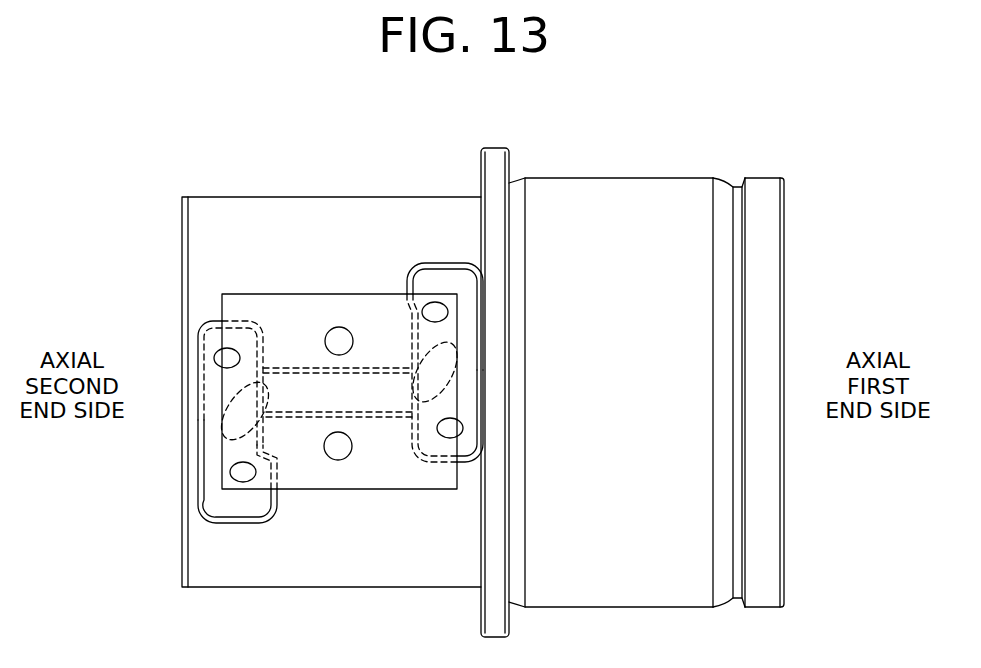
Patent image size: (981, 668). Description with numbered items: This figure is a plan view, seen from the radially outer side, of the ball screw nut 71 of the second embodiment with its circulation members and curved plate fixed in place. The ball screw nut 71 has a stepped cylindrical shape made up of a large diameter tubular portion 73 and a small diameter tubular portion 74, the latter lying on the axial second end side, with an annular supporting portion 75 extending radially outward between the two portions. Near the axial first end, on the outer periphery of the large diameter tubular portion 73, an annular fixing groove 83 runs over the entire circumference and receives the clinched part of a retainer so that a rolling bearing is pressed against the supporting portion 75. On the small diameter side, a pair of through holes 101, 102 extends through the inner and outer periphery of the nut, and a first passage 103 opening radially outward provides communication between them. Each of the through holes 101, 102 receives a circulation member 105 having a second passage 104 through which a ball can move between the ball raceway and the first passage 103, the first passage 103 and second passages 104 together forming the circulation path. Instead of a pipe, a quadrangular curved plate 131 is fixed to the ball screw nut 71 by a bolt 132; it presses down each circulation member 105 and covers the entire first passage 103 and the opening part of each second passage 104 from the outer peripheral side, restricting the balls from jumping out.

The ball screw nut 71 is at (153, 149).
The large diameter tubular portion 73 is at (608, 177).
The small diameter tubular portion 74 is at (209, 198).
The supporting portion 75 is at (497, 147).
The fixing groove 83 is at (738, 184).
The through hole 101 is at (205, 487).
The through hole 102 is at (478, 299).
The first passage 103 is at (350, 433).
The second passage 104 is at (265, 386).
The circulation member 105 is at (208, 337).
The curved plate 131 is at (366, 302).
The bolt 132 is at (337, 327).